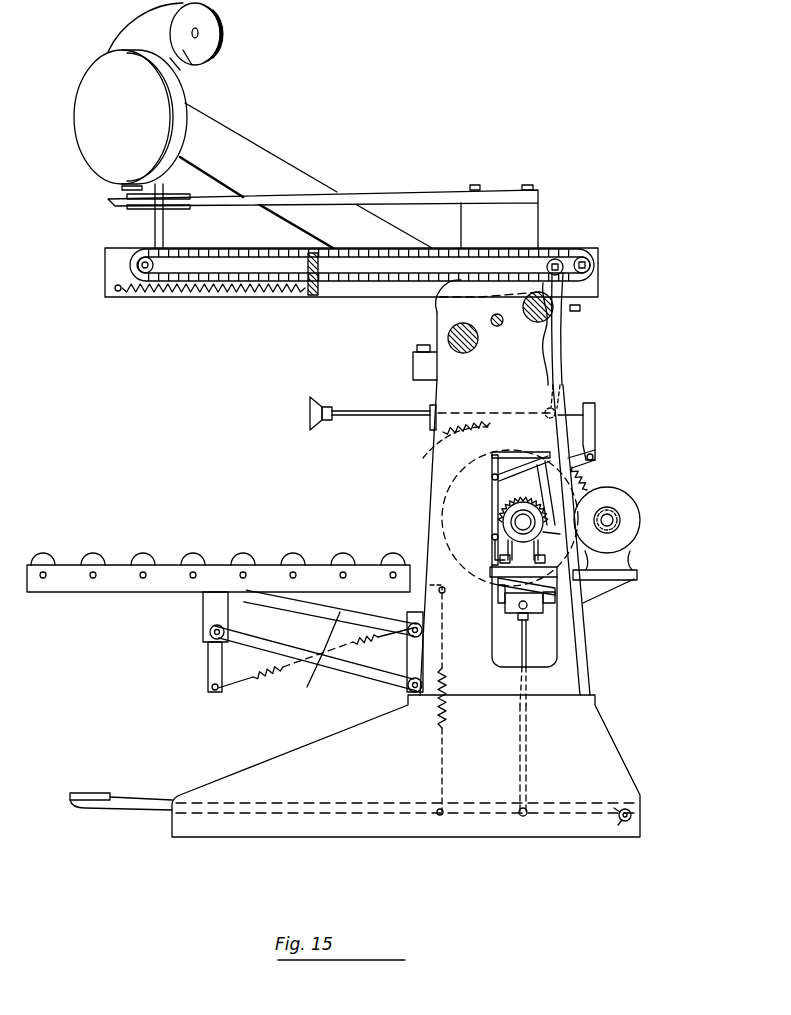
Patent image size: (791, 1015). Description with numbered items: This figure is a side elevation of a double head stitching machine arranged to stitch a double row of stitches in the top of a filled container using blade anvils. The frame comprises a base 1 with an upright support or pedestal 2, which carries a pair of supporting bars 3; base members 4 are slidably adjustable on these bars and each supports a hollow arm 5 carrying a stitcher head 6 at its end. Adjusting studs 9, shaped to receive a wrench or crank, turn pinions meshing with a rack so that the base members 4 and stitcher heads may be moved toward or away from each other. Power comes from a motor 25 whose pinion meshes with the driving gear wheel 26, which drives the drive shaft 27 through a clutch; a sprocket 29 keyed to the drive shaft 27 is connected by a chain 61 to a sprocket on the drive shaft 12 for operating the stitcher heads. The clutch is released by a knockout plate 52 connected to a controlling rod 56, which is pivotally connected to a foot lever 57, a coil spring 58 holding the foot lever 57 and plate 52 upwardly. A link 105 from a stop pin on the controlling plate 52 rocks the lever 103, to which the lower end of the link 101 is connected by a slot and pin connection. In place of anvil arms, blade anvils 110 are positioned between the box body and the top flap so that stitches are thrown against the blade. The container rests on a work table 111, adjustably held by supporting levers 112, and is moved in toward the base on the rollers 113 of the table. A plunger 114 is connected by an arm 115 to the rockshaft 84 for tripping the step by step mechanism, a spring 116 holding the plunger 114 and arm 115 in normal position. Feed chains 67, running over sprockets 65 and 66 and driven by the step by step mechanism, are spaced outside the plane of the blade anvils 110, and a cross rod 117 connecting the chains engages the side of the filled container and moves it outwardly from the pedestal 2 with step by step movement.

The base 1 is at (604, 752).
The upright support or pedestal 2 is at (430, 509).
The supporting bar 3 is at (448, 336).
The base member 4 is at (553, 327).
The hollow arm 5 is at (295, 170).
The stitcher head 6 is at (100, 143).
The adjusting stud 9 is at (581, 307).
The drive shaft 12 is at (500, 326).
The motor 25 is at (630, 508).
The driving gear wheel 26 is at (584, 479).
The drive shaft 27 is at (520, 520).
The sprocket 29 is at (508, 500).
The knockout plate 52 is at (502, 549).
The controlling rod 56 is at (520, 650).
The foot lever 57 is at (106, 793).
The coil spring 58 is at (436, 722).
The chain 61 is at (560, 534).
The sprocket 65 is at (592, 265).
The sprocket 66 is at (134, 263).
The chain 67 is at (380, 290).
The rockshaft 84 is at (560, 262).
The link 101 is at (598, 416).
The lever 103 is at (576, 457).
The link 105 is at (493, 488).
The blade anvil 110 is at (371, 196).
The work table 111 is at (113, 592).
The supporting lever 112 is at (352, 677).
The roller 113 is at (145, 560).
The plunger 114 is at (372, 418).
The arm 115 is at (566, 360).
The spring 116 is at (430, 452).
The cross rod 117 is at (311, 300).